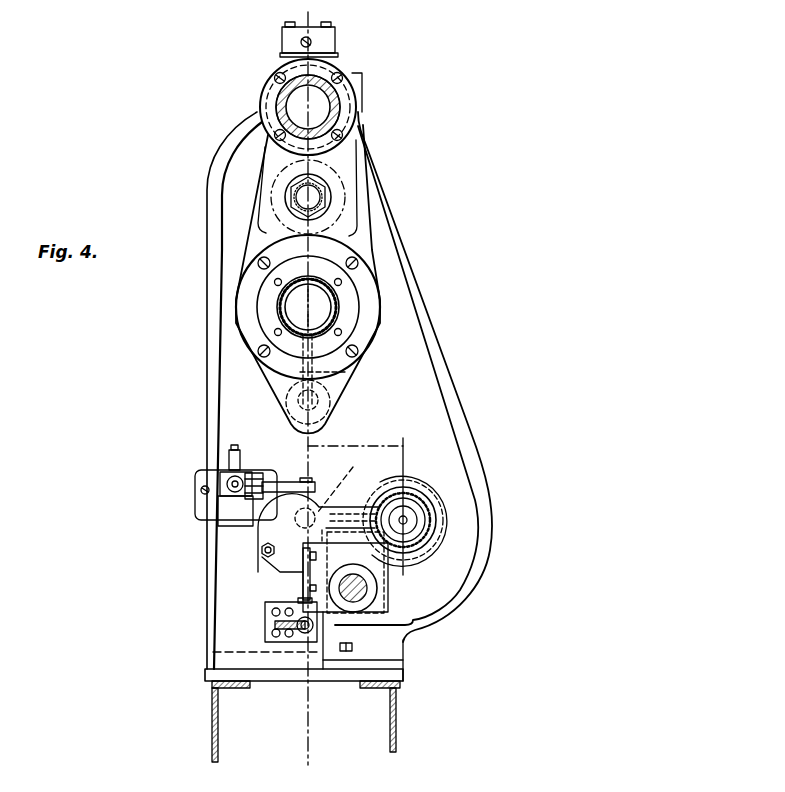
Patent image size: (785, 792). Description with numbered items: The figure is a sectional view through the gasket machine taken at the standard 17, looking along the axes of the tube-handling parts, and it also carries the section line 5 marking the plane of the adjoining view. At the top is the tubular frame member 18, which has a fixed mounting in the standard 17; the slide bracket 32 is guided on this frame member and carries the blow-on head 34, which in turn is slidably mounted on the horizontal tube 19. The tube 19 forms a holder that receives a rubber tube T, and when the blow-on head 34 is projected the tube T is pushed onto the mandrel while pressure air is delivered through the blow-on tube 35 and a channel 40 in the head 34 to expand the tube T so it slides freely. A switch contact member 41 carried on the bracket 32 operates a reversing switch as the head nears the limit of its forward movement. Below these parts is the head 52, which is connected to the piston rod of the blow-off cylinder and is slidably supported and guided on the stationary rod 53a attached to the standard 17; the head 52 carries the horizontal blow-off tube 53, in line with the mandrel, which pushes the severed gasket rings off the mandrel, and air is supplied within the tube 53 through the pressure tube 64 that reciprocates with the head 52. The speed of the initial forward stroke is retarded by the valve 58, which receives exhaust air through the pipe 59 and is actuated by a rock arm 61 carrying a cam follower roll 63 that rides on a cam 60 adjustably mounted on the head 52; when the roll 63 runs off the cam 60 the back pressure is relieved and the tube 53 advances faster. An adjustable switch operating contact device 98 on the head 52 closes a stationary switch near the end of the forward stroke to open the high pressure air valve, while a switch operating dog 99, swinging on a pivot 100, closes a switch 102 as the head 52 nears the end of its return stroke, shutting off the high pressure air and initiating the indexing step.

The section line 5- 5 is at (316, 21).
The switch contact member 41 is at (300, 42).
The tubular frame member 18 is at (292, 96).
The slide bracket 32 is at (362, 240).
The blow-on head 34 is at (268, 302).
The horizontal tube 19 is at (282, 318).
The rubber tube T is at (338, 313).
The standard 17 is at (410, 357).
The channel 40 is at (352, 377).
The blow-on tube 35 is at (333, 403).
The pipe 59 is at (243, 462).
The rock arm 61 is at (256, 483).
The cam follower roll 63 is at (263, 490).
The cam 60 is at (302, 487).
The pressure tube 64 is at (339, 481).
The head 52 is at (350, 510).
The blow-off tube 53 is at (418, 500).
The valve 58 is at (243, 516).
The switch operating contact device 98 is at (262, 554).
The switch operating dog 99 is at (302, 577).
The switch 102 is at (303, 594).
The pivot 100 is at (312, 557).
The stationary rod 53a is at (362, 593).